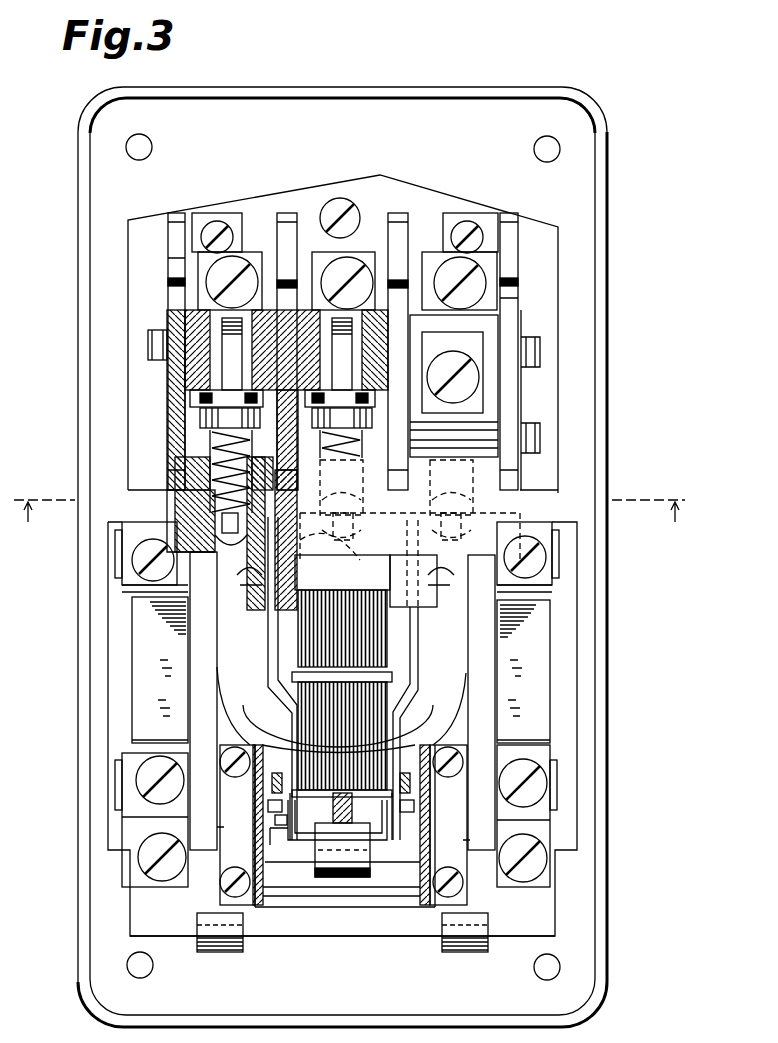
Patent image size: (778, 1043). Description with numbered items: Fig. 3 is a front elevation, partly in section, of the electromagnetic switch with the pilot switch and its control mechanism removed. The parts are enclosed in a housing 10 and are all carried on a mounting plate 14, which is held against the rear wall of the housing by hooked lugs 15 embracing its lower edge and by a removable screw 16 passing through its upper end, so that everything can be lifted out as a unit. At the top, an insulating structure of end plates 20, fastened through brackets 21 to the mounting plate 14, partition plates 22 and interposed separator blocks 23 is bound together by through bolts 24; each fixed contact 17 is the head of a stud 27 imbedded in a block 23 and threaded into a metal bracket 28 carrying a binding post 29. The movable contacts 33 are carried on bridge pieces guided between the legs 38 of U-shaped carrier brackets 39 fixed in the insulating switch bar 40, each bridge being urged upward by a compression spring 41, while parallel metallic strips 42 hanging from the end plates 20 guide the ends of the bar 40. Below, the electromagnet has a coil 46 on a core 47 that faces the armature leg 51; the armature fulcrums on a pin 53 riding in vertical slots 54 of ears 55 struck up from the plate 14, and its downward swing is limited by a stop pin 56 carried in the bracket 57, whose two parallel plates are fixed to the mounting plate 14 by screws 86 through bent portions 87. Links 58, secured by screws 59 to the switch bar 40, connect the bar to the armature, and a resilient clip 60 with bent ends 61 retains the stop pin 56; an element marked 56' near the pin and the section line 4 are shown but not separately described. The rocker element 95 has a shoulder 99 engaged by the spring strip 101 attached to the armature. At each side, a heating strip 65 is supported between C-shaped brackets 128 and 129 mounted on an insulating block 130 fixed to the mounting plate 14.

The housing 10 is at (607, 207).
The mounting plate 14 is at (540, 392).
The hooked lugs 15 is at (218, 935).
The removable screw 16 is at (338, 205).
The contact member 17 is at (190, 397).
The end plates 20 is at (168, 258).
The brackets 21 is at (180, 216).
The partition plates 22 is at (287, 213).
The separator blocks 23 is at (266, 300).
The through bolts 24 is at (540, 352).
The stud 27 is at (222, 372).
The metal bracket 28 is at (167, 313).
The binding post 29 is at (465, 385).
The movable contacts 33 is at (200, 418).
The legs 38 is at (212, 438).
The U-shaped carrier bracket 39 is at (178, 478).
The movable switch bar 40 is at (310, 540).
The compression spring 41 is at (212, 455).
The parallel metallic strips 42 is at (128, 586).
The coil 46 is at (463, 694).
The core 47 is at (340, 605).
The armature leg 51 is at (370, 730).
The pin 53 is at (270, 808).
The vertical slots 54 is at (272, 837).
The ears 55 is at (256, 793).
The stop pin 56 is at (345, 838).
The base bar 56' is at (342, 937).
The bracket 57 is at (265, 748).
The links 58 is at (267, 655).
The screws 59 is at (246, 583).
The resilient steel clip 60 is at (268, 818).
The ends of the clip 61 is at (222, 860).
The heating coil or strip 65 is at (142, 688).
The screws 86 is at (222, 766).
The bent portions 87 is at (215, 830).
The rocker element 95 is at (333, 793).
The shoulder 99 is at (333, 849).
The spring strip 101 is at (340, 882).
The C-shaped bracket 128 is at (122, 787).
The C-shaped bracket 129 is at (122, 562).
The elongated block 130 is at (116, 655).
The section line 4- 4 is at (349, 501).